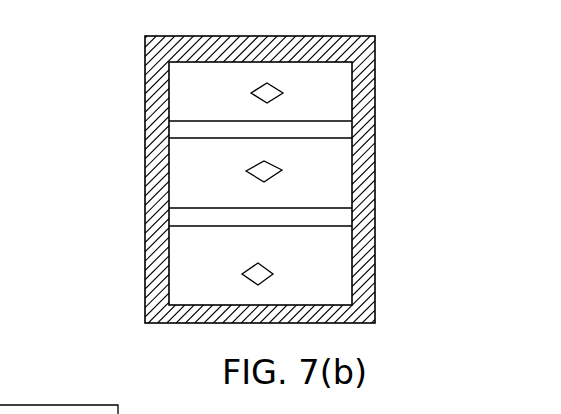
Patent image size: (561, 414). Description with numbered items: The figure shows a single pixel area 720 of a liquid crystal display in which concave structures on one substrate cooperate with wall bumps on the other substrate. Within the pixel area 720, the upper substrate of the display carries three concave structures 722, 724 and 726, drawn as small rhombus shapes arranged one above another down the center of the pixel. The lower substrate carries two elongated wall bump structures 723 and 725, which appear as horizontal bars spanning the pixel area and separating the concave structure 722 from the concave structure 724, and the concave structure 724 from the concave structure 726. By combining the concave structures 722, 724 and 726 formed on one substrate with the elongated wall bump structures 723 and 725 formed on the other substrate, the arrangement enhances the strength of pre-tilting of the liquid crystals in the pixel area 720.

The pixel area 720 is at (200, 277).
The concave structure 722 is at (283, 93).
The elongated wall bump structure 723 is at (183, 129).
The concave structure 724 is at (282, 170).
The elongated wall bump structure 725 is at (190, 217).
The concave structure 726 is at (273, 274).